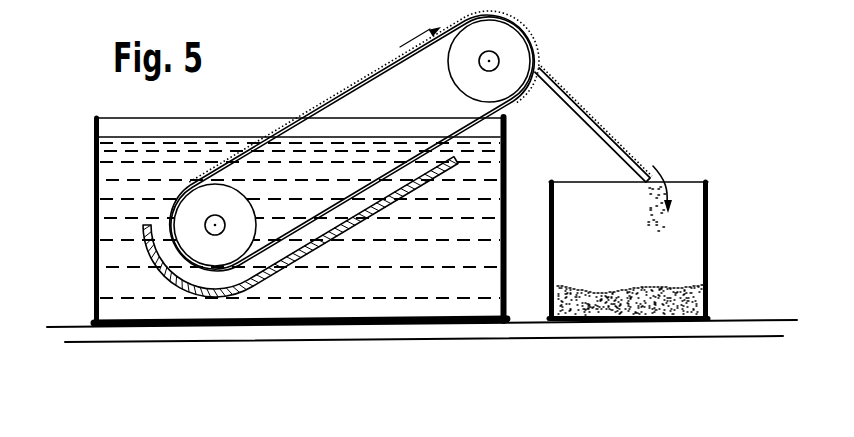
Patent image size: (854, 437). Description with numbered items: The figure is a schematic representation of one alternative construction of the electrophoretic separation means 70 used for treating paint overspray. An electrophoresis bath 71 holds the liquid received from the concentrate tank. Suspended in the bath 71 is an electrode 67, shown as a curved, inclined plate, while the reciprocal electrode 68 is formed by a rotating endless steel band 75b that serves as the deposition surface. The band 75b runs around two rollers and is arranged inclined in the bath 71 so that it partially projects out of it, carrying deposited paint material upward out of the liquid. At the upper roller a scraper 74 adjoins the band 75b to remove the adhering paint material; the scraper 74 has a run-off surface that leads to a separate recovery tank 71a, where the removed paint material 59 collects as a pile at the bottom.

The electrophoresis bath 71 is at (93, 259).
The recovery tank 71a is at (708, 226).
The reciprocal electrode 68 is at (296, 108).
The electrode 67 is at (287, 281).
The rotating endless steel band 75b is at (367, 76).
The scraper 74 is at (578, 102).
The electrophoretic separation means 70 is at (580, 170).
The removed paint material 59 is at (688, 298).